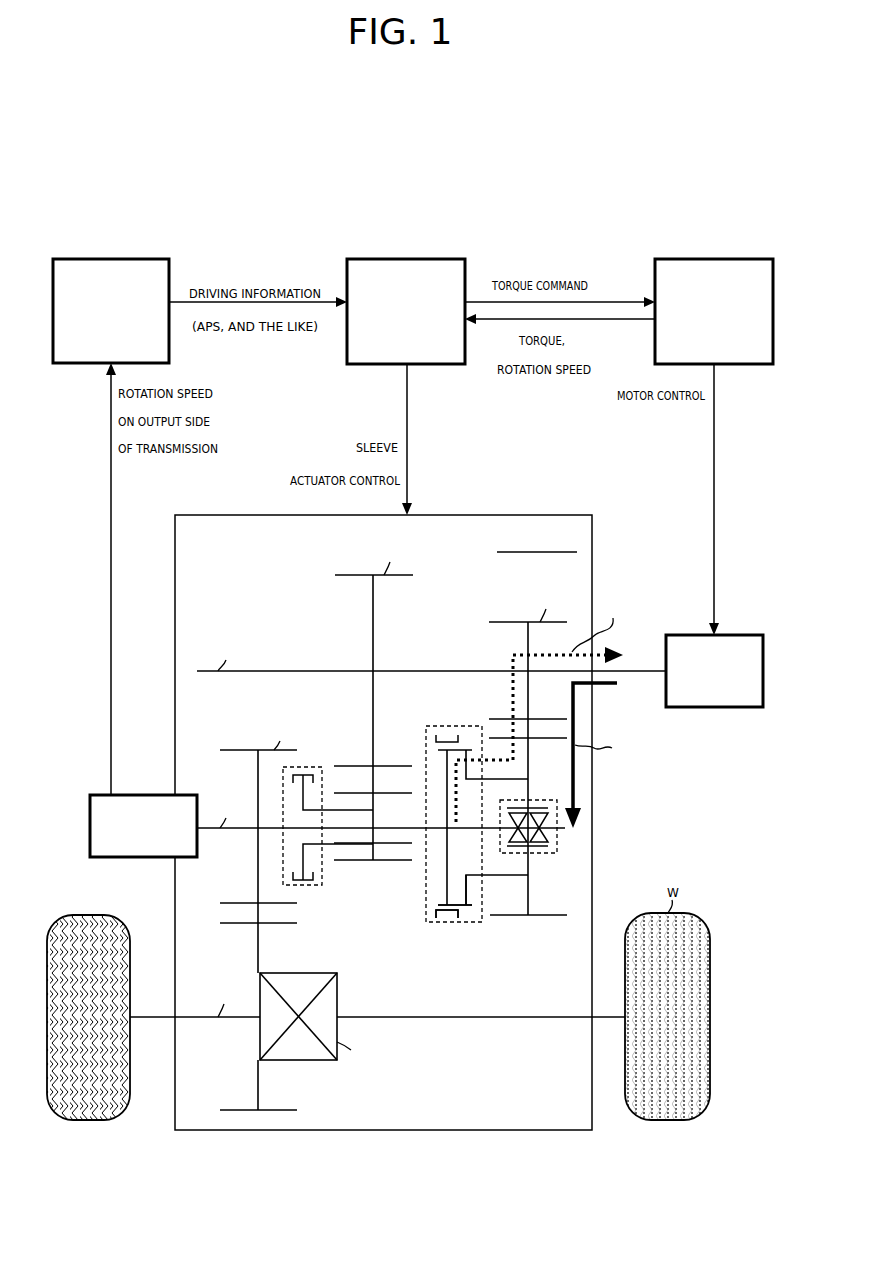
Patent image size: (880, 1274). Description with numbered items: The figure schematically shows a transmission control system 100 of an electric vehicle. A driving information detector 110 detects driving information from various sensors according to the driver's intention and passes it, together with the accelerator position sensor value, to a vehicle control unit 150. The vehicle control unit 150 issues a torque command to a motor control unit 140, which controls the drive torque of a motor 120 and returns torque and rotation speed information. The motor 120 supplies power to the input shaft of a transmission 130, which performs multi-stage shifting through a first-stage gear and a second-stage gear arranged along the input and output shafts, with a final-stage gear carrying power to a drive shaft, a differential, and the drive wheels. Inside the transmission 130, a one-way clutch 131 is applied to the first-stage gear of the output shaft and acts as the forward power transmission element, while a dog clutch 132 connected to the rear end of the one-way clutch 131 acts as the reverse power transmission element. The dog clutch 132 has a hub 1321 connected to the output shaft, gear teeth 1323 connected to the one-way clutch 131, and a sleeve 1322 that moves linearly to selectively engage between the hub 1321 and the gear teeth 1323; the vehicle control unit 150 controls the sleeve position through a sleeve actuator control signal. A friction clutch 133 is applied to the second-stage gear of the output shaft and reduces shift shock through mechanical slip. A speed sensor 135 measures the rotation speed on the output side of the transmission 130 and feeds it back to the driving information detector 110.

The transmission control system 100 is at (312, 186).
The driving information detector 110 is at (112, 258).
The motor 120 is at (741, 635).
The transmission 130 is at (541, 508).
The one-way clutch 131 is at (548, 853).
The dog clutch 132 is at (454, 726).
The friction clutch 133 is at (318, 767).
The speed sensor 135 is at (140, 795).
The motor control unit 140 is at (712, 258).
The vehicle control unit 150 is at (406, 258).
The hub 1321 is at (437, 905).
The sleeve 1322 is at (447, 918).
The gear teeth 1323 is at (470, 908).